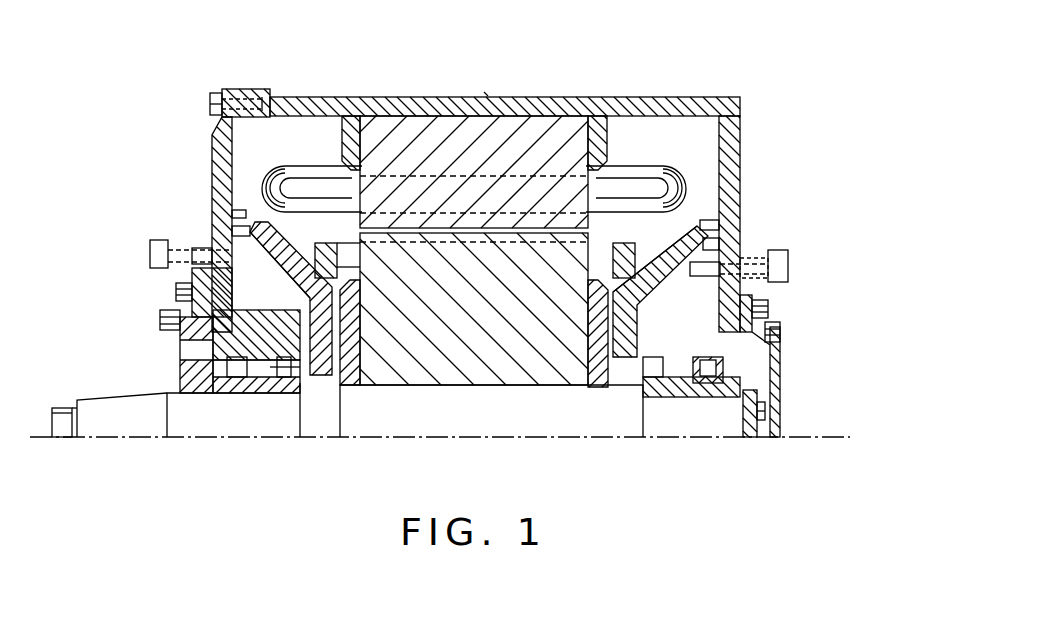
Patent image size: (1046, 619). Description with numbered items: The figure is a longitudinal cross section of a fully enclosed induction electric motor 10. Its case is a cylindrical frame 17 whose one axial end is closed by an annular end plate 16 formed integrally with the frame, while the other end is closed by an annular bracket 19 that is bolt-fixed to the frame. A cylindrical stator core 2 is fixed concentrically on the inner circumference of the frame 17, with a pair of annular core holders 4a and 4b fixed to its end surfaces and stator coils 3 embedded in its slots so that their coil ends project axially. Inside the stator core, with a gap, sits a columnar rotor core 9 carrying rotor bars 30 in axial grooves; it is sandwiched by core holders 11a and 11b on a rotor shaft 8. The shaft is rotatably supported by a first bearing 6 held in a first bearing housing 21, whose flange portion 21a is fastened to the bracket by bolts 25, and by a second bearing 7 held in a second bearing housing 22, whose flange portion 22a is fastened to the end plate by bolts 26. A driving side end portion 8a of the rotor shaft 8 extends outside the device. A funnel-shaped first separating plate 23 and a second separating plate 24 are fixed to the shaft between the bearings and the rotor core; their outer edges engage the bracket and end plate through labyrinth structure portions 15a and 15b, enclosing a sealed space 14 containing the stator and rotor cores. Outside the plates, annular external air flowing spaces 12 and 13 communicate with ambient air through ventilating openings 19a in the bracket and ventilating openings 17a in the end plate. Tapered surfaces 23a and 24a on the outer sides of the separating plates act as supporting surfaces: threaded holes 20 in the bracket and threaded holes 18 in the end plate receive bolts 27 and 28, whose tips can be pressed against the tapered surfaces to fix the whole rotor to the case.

The electric motor 10 is at (486, 88).
The stator core 2 is at (542, 118).
The stator coils 3 is at (308, 172).
The core holder 4a is at (352, 120).
The core holder 4b is at (601, 120).
The frame 17 is at (700, 104).
The end plate 16 is at (742, 122).
The sealed space 14 is at (275, 125).
The bracket 19 is at (212, 150).
The labyrinth structure portion 15a is at (238, 212).
The labyrinth structure portion 15b is at (722, 215).
The threaded holes for fixing 20 is at (215, 232).
The first separating plate 23 is at (276, 246).
The tapered surface 23a is at (275, 269).
The second separating plate 24 is at (650, 262).
The tapered surface 24a is at (668, 300).
The rotor bar 30 is at (618, 243).
The threaded holes for fixing 18 is at (728, 248).
The ventilating openings 17a is at (752, 268).
The bolt for fixing the rotor 28 is at (790, 260).
The flange portion 22a is at (752, 300).
The bolts 26 is at (768, 308).
The second bearing housing 22 is at (780, 325).
The bolt for fixing the rotor 27 is at (150, 257).
The ventilating openings 19a is at (205, 272).
The bolts 25 is at (176, 292).
The flange portion 21a is at (160, 320).
The first bearing housing 21 is at (190, 346).
The rotor shaft 8 is at (444, 437).
The driving side end portion 8a is at (140, 437).
The first bearing 6 is at (238, 380).
The external air flowing space 12 is at (268, 380).
The core holder 11a is at (350, 390).
The core holder 11b is at (605, 390).
The rotor core 9 is at (530, 388).
The external air flowing space 13 is at (655, 390).
The second bearing 7 is at (705, 385).